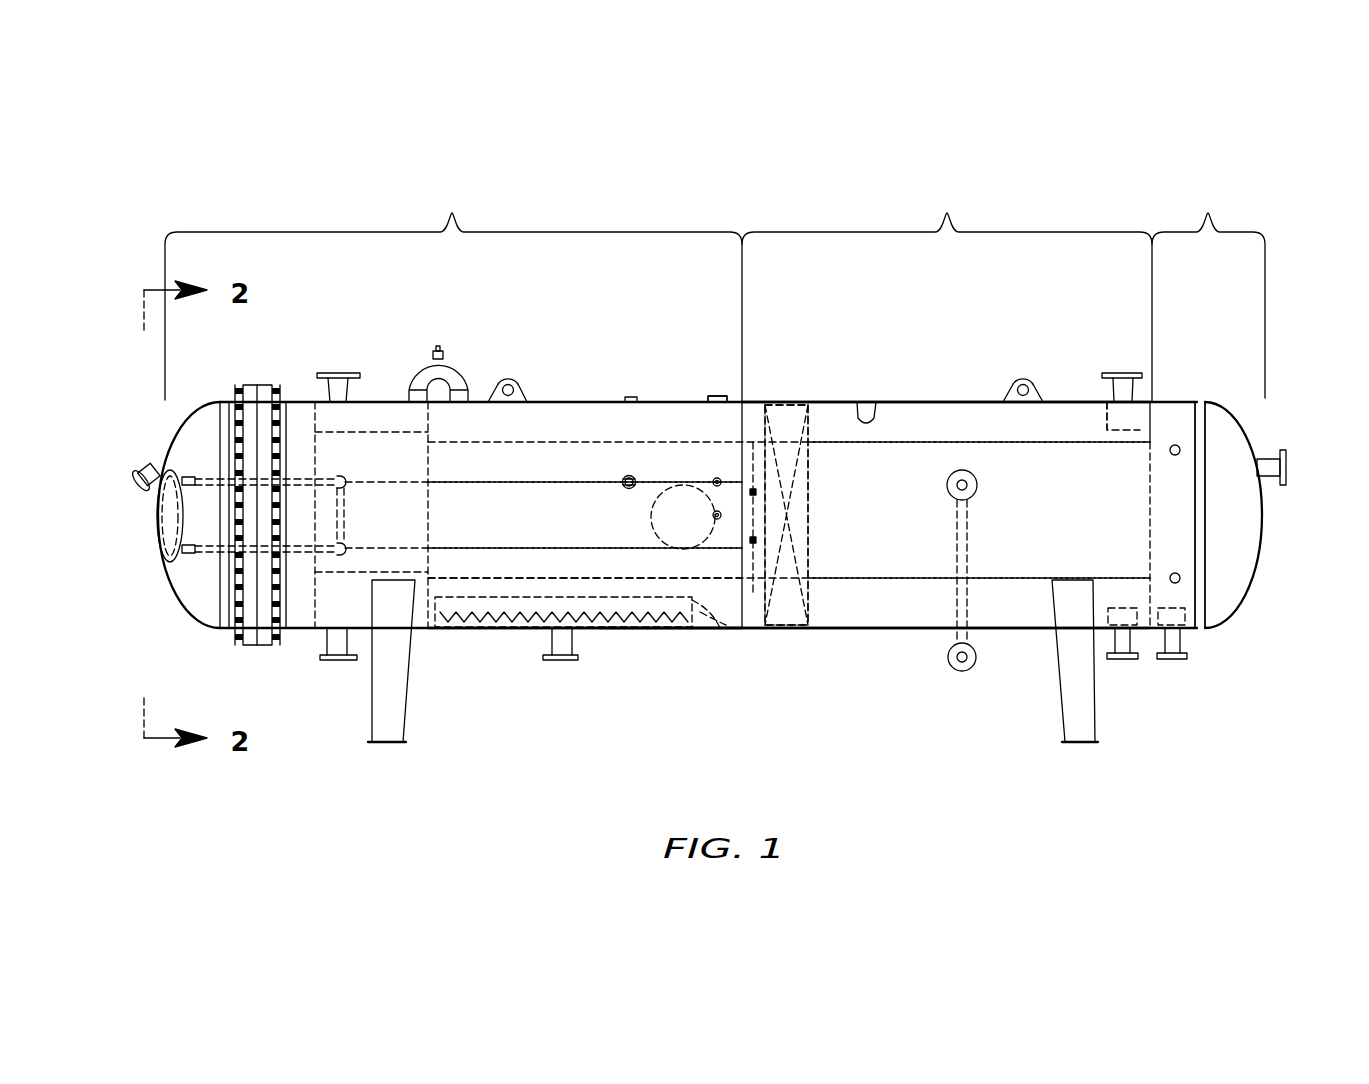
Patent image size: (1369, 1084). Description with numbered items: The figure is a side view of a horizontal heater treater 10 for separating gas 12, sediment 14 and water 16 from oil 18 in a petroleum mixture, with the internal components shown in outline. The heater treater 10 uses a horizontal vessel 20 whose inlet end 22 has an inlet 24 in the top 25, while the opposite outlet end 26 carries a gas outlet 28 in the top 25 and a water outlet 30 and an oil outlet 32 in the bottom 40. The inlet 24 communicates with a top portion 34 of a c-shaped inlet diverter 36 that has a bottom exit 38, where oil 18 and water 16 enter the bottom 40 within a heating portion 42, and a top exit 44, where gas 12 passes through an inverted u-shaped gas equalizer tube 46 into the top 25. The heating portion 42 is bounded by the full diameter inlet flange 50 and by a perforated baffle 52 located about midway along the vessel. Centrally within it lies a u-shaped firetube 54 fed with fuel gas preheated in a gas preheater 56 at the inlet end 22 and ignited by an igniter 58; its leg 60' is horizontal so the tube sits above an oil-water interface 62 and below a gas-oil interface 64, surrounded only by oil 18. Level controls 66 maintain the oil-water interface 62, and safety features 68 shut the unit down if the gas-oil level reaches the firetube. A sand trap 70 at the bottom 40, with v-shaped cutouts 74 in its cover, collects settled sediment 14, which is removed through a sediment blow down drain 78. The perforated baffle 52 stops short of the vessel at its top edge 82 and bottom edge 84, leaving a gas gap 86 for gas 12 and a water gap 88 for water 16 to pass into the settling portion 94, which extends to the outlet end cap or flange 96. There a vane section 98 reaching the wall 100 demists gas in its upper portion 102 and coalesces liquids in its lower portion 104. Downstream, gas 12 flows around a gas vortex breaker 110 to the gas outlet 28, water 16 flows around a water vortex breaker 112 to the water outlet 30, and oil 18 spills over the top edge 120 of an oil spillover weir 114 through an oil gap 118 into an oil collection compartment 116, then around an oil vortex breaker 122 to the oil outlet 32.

The heater treater 10 is at (1040, 309).
The gas 12 is at (573, 423).
The sediment 14 is at (705, 630).
The water 16 is at (847, 612).
The oil 18 is at (523, 465).
The horizontal vessel 20 is at (912, 402).
The inlet end 22 is at (197, 423).
The inlet 24 is at (333, 372).
The top 25 is at (630, 474).
The outlet end 26 is at (1237, 417).
The gas outlet 28 is at (1125, 378).
The water outlet 30 is at (1130, 662).
The oil outlet 32 is at (1177, 662).
The top portion of inlet diverter 34 is at (392, 432).
The inlet diverter 36 is at (396, 428).
The bottom exit 38 is at (337, 576).
The bottom 40 is at (728, 627).
The heating portion 42 is at (453, 291).
The top exit 44 is at (418, 400).
The gas equalizer tube 46 is at (453, 372).
The inlet flange 50 is at (248, 645).
The perforated baffle 52 is at (703, 400).
The firetube 54 is at (592, 548).
The gas preheater 56 is at (210, 478).
The igniter 58 is at (147, 468).
The leg of firetube 60' is at (585, 630).
The oil-water interface 62 is at (1002, 580).
The gas-oil interface 64 is at (967, 440).
The level controls 66 is at (953, 497).
The safety features 68 is at (637, 472).
The sand trap 70 is at (542, 578).
The cutouts 74 is at (470, 625).
The sediment blow down drain 78 is at (563, 660).
The top edge of baffle 82 is at (753, 405).
The bottom edge of baffle 84 is at (782, 630).
The gas gap 86 is at (757, 425).
The water gap 88 is at (757, 630).
The settling portion 94 is at (947, 291).
The outlet end cap or flange 96 is at (1198, 630).
The vane section 98 is at (788, 520).
The wall 100 is at (878, 400).
The upper portion of vane section 102 is at (795, 423).
The lower portion of vane section 104 is at (803, 542).
The gas vortex breaker 110 is at (1105, 419).
The water vortex breaker 112 is at (1105, 617).
The oil spillover weir 114 is at (1152, 523).
The oil collection compartment 116 is at (1208, 289).
The oil gap 118 is at (1143, 420).
The top edge of weir 120 is at (1150, 443).
The oil vortex breaker 122 is at (1185, 607).